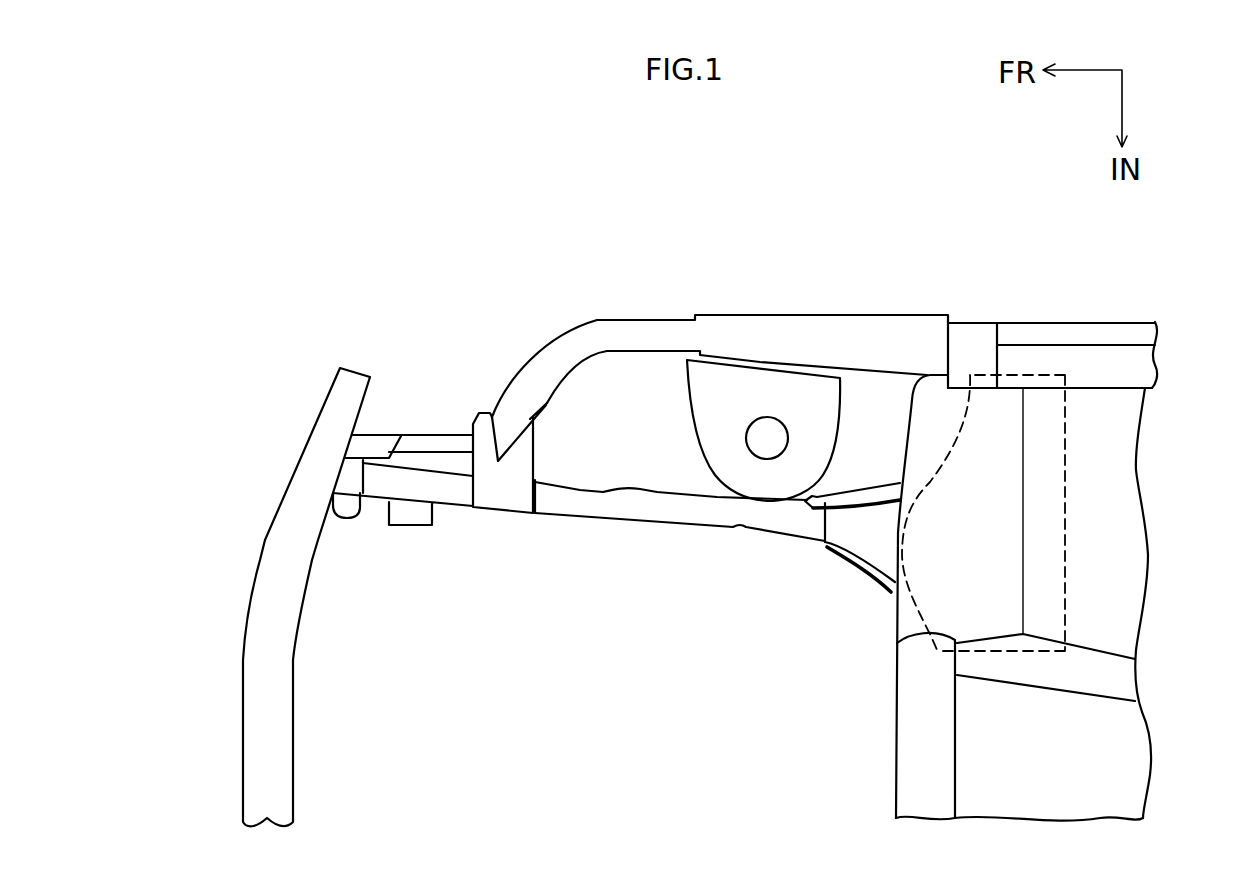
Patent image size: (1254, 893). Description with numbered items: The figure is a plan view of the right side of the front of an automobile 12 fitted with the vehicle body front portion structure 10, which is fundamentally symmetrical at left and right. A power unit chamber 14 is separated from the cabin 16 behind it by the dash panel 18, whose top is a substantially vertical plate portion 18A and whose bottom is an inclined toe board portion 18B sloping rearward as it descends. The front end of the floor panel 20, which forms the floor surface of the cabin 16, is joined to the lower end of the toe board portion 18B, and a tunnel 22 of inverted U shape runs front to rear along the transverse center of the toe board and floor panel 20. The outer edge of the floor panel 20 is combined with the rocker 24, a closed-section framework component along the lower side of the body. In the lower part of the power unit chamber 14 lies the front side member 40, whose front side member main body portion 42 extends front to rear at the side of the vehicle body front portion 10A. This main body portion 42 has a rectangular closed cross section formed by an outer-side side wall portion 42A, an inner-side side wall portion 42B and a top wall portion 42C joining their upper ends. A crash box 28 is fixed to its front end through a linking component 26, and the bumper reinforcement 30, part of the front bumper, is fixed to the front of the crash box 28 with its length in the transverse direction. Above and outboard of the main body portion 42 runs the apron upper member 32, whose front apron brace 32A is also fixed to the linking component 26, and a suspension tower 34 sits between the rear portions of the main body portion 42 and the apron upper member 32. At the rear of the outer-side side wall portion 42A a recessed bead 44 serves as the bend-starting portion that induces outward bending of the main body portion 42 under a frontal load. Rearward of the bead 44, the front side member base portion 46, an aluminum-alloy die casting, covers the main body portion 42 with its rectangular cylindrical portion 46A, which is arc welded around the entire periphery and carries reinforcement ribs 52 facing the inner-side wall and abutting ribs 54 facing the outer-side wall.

The vehicle body front portion structure 10 is at (837, 205).
The vehicle body front portion 10A is at (683, 246).
The automobile 12 is at (984, 178).
The power unit chamber 14 is at (612, 708).
The cabin 16 is at (1126, 779).
The dash panel 18 is at (881, 712).
The vertical plate portion 18A is at (888, 626).
The toe board portion 18B is at (1013, 551).
The floor panel 20 is at (1125, 583).
The tunnel 22 is at (1123, 678).
The rocker 24 is at (1145, 360).
The linking component 26 is at (502, 504).
The crash box 28 is at (420, 494).
The bumper reinforcement 30 is at (285, 503).
The apron upper member 32 is at (785, 301).
The apron brace 32A is at (595, 318).
The suspension tower 34 is at (710, 411).
The front side member 40 is at (695, 549).
The front side member main body portion 42 is at (632, 535).
The outer-side side wall portion 42A is at (625, 478).
The inner-side side wall portion 42B is at (570, 533).
The top wall portion 42C is at (570, 501).
The bead 44 is at (809, 487).
The front side member base portion 46 is at (822, 584).
The rectangular cylindrical portion 46A is at (871, 517).
The reinforcement rib 52 is at (853, 584).
The abutting rib 54 is at (876, 466).